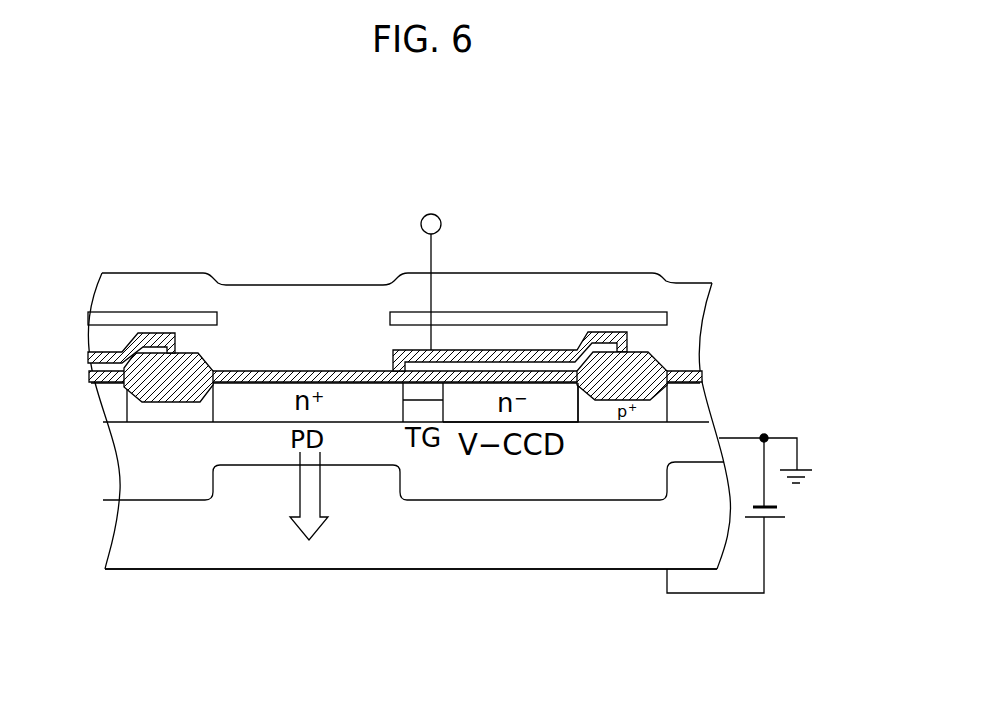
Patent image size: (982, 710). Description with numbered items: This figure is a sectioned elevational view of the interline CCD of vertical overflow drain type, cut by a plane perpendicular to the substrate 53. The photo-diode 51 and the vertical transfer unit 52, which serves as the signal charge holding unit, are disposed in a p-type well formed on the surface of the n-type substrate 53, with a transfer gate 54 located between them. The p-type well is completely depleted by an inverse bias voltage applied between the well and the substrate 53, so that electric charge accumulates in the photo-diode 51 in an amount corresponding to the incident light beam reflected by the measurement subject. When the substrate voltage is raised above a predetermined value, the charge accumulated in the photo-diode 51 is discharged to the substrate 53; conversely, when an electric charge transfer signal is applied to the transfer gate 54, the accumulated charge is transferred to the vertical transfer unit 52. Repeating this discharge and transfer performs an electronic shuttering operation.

The photo-diode 51 is at (250, 447).
The vertical transfer unit 52 is at (557, 478).
The substrate 53 is at (408, 543).
The transfer gate 54 is at (422, 412).